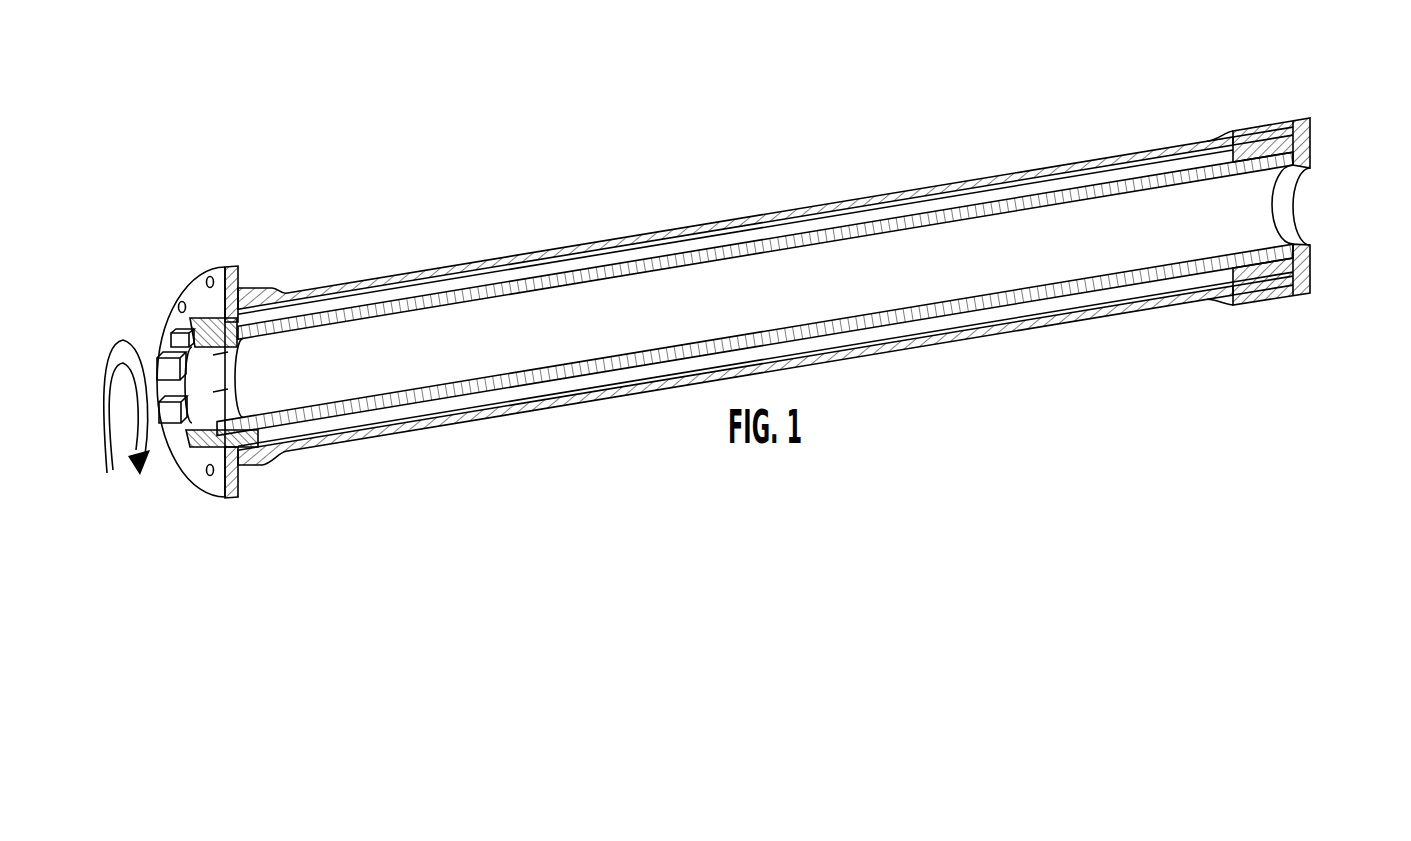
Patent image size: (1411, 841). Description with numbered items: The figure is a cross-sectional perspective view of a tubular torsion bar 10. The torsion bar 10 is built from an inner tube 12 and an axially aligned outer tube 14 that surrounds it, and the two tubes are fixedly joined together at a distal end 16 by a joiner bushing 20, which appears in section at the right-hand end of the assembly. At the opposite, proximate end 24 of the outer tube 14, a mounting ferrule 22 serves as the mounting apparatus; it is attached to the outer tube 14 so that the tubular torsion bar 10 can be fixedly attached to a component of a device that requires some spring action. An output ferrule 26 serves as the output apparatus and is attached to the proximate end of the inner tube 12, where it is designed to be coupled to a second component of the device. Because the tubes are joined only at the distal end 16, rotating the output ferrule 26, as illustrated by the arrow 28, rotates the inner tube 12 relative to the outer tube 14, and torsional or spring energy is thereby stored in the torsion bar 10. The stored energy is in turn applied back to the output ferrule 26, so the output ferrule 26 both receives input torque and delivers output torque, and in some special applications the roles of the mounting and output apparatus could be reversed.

The tubular torsion bar 10 is at (912, 144).
The inner tube 12 is at (1075, 197).
The outer tube 14 is at (1003, 183).
The distal end 16 is at (1276, 99).
The joiner bushing 20 is at (1312, 140).
The mounting ferrule 22 is at (195, 283).
The proximate end 24 is at (192, 238).
The output ferrule 26 is at (165, 345).
The arrow 28 is at (95, 425).